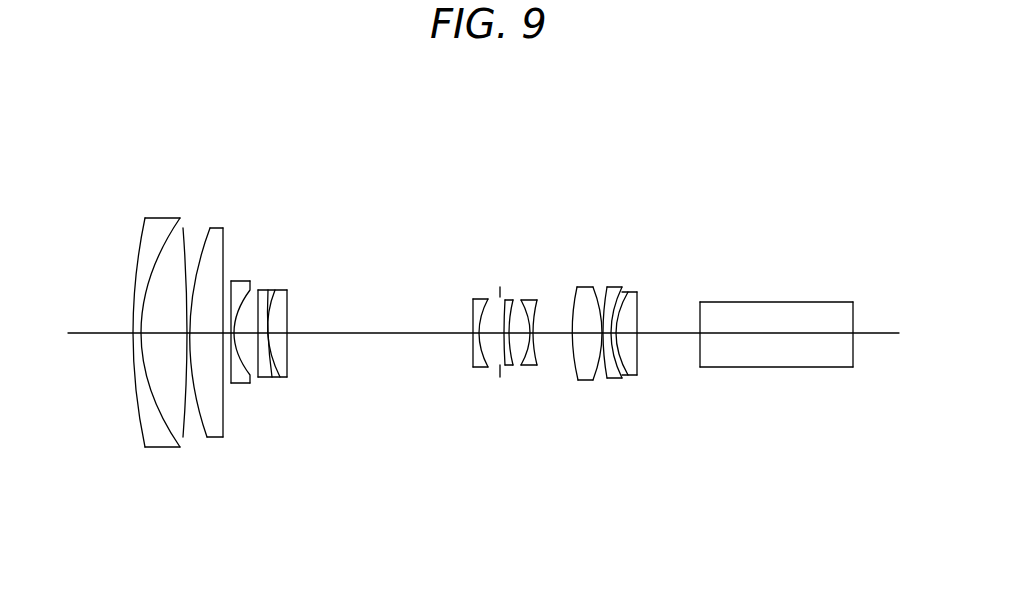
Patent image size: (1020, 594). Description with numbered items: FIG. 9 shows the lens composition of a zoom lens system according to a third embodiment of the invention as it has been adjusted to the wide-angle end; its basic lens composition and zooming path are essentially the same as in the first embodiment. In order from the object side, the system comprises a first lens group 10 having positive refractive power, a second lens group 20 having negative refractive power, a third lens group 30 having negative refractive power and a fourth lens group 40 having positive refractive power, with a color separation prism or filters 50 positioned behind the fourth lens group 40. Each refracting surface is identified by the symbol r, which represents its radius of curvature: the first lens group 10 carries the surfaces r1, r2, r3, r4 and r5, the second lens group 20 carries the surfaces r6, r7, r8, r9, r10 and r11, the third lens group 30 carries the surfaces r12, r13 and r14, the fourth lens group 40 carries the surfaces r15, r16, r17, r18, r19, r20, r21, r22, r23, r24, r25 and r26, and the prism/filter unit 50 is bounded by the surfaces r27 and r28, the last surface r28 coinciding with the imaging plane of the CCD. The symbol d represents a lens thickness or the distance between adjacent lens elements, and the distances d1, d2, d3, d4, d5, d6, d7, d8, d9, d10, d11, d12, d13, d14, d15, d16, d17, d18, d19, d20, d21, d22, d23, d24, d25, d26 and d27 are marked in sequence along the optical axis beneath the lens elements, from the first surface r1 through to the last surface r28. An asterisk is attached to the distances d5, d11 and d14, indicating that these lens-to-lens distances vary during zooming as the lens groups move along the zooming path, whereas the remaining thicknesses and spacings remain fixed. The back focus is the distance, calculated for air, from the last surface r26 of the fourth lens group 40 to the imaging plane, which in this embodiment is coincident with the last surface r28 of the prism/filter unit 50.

The first lens group 10 is at (247, 130).
The second lens group 20 is at (240, 160).
The third lens group 30 is at (519, 158).
The fourth lens group 40 is at (822, 162).
The color separation prism or filters 50 is at (813, 130).
The radius of curvature of first surface r1 is at (145, 218).
The radius of curvature of second surface r2 is at (180, 218).
The radius of curvature of third surface r3 is at (183, 228).
The radius of curvature of fourth surface r4 is at (210, 228).
The radius of curvature of fifth surface r5 is at (224, 228).
The radius of curvature of sixth surface r6 is at (231, 281).
The radius of curvature of seventh surface r7 is at (250, 281).
The radius of curvature of eighth surface r8 is at (258, 290).
The radius of curvature of ninth surface r9 is at (268, 290).
The radius of curvature of tenth surface r10 is at (275, 290).
The radius of curvature of eleventh surface r11 is at (287, 290).
The radius of curvature of twelfth surface r12 is at (473, 299).
The radius of curvature of thirteenth surface r13 is at (488, 299).
The radius of curvature of fourteenth surface r14 is at (500, 287).
The radius of curvature of fifteenth surface r15 is at (505, 300).
The radius of curvature of sixteenth surface r16 is at (513, 300).
The radius of curvature of seventeenth surface r17 is at (521, 300).
The radius of curvature of eighteenth surface r18 is at (537, 300).
The radius of curvature of nineteenth surface r19 is at (577, 287).
The radius of curvature of twentieth surface r20 is at (593, 287).
The radius of curvature of twenty-first surface r21 is at (607, 287).
The radius of curvature of twenty-second surface r22 is at (622, 287).
The radius of curvature of twenty-third surface r23 is at (626, 292).
The radius of curvature of twenty-fourth surface r24 is at (630, 292).
The radius of curvature of twenty-fifth surface r25 is at (634, 292).
The radius of curvature of twenty-sixth surface r26 is at (637, 292).
The radius of curvature of twenty-seventh surface r27 is at (700, 302).
The last surface of prism/filter unit r28 is at (853, 302).
The lens thickness d1 is at (137, 333).
The lens thickness or lens-to-lens distance d2 is at (162, 333).
The lens thickness or lens-to-lens distance d3 is at (187, 333).
The lens thickness or lens-to-lens distance d4 is at (205, 333).
The variable lens-to-lens distance d5 is at (227, 333).
The lens thickness or lens-to-lens distance d6 is at (233, 333).
The lens thickness or lens-to-lens distance d7 is at (246, 333).
The lens thickness or lens-to-lens distance d8 is at (263, 333).
The lens thickness or lens-to-lens distance d9 is at (270, 333).
The lens thickness or lens-to-lens distance d10 is at (278, 333).
The variable lens-to-lens distance d11 is at (382, 333).
The lens thickness or lens-to-lens distance d12 is at (479, 333).
The lens thickness or lens-to-lens distance d13 is at (489, 333).
The variable lens-to-lens distance d14 is at (504, 333).
The lens thickness or lens-to-lens distance d15 is at (508, 333).
The lens thickness or lens-to-lens distance d16 is at (518, 333).
The lens thickness or lens-to-lens distance d17 is at (531, 333).
The lens thickness or lens-to-lens distance d18 is at (553, 333).
The lens thickness or lens-to-lens distance d19 is at (587, 333).
The lens thickness or lens-to-lens distance d20 is at (602, 333).
The lens thickness or lens-to-lens distance d21 is at (607, 333).
The lens thickness or lens-to-lens distance d22 is at (613, 333).
The lens thickness or lens-to-lens distance d23 is at (620, 333).
The lens thickness or lens-to-lens distance d24 is at (630, 333).
The lens thickness or lens-to-lens distance d25 is at (636, 333).
The lens-to-lens distance d26 is at (645, 333).
The prism/filter thickness d27 is at (777, 334).